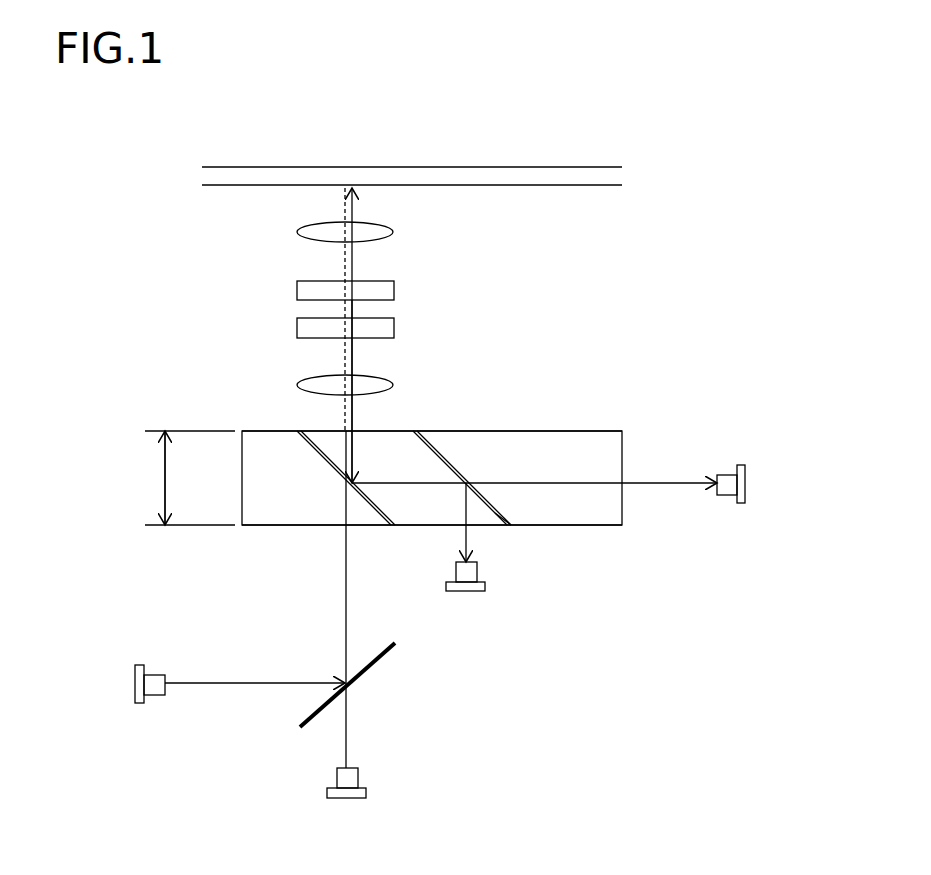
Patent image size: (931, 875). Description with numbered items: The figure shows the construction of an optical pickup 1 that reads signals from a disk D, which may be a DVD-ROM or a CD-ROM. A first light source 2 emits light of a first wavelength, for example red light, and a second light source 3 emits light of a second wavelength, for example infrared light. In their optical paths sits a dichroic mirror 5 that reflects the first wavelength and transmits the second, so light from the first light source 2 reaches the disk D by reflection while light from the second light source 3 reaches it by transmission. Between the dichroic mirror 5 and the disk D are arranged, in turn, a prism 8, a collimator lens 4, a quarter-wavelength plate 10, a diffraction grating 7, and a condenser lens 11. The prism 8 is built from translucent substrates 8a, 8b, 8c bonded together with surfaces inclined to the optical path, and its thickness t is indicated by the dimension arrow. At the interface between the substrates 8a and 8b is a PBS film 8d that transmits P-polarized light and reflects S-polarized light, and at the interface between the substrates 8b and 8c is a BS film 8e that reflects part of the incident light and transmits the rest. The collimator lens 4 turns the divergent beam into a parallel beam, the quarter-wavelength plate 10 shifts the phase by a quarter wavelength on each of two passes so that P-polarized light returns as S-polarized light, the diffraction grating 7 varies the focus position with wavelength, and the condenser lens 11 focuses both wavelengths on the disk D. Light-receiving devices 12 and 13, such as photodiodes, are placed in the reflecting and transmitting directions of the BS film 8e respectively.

The optical pickup 1 is at (708, 205).
The first light source 2 is at (140, 705).
The second light source 3 is at (352, 800).
The collimator lens 4 is at (394, 384).
The dichroic mirror 5 is at (362, 672).
The diffraction grating 7 is at (394, 289).
The prism 8 is at (605, 525).
The translucent substrate 8a is at (270, 513).
The translucent substrate 8b is at (497, 523).
The translucent substrate 8c is at (578, 438).
The PBS film 8d is at (300, 434).
The BS film 8e is at (446, 460).
The quarter-wavelength plate 10 is at (394, 326).
The condenser lens 11 is at (393, 232).
The light-receiving device 12 is at (470, 593).
The light-receiving device 13 is at (745, 483).
The disk D is at (580, 178).
The thickness of the prism t is at (184, 478).